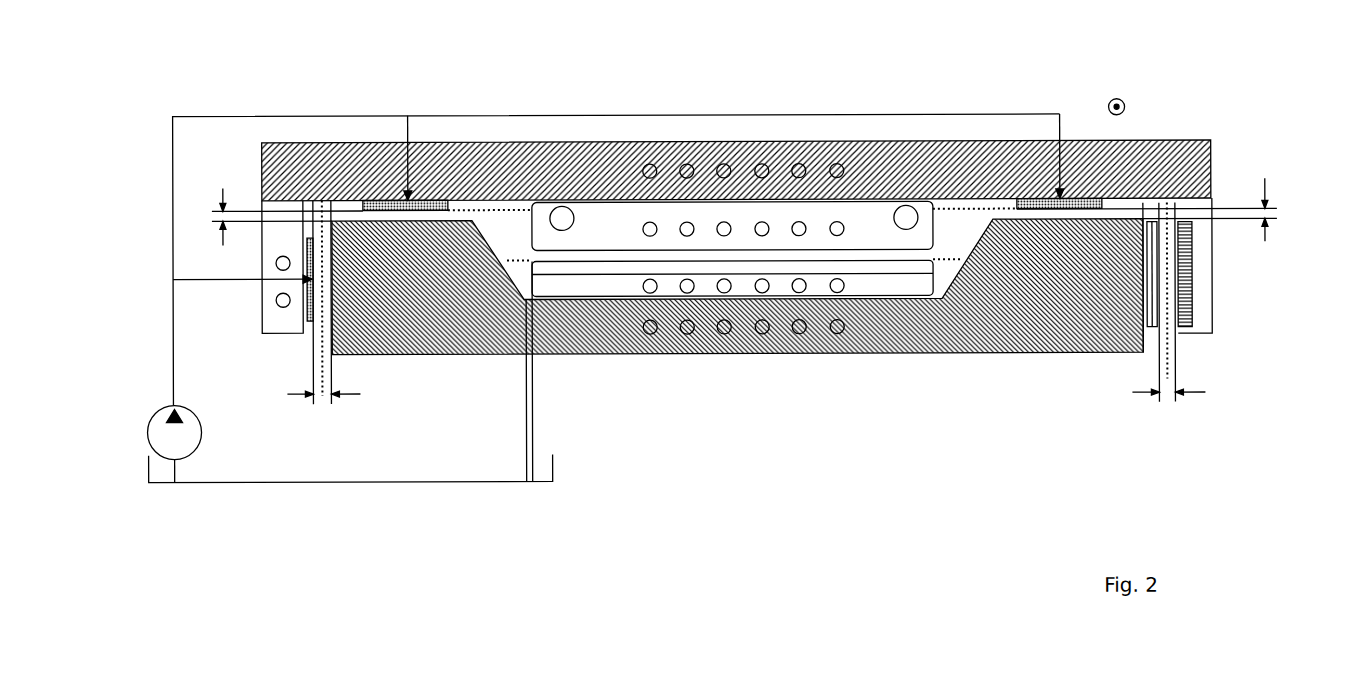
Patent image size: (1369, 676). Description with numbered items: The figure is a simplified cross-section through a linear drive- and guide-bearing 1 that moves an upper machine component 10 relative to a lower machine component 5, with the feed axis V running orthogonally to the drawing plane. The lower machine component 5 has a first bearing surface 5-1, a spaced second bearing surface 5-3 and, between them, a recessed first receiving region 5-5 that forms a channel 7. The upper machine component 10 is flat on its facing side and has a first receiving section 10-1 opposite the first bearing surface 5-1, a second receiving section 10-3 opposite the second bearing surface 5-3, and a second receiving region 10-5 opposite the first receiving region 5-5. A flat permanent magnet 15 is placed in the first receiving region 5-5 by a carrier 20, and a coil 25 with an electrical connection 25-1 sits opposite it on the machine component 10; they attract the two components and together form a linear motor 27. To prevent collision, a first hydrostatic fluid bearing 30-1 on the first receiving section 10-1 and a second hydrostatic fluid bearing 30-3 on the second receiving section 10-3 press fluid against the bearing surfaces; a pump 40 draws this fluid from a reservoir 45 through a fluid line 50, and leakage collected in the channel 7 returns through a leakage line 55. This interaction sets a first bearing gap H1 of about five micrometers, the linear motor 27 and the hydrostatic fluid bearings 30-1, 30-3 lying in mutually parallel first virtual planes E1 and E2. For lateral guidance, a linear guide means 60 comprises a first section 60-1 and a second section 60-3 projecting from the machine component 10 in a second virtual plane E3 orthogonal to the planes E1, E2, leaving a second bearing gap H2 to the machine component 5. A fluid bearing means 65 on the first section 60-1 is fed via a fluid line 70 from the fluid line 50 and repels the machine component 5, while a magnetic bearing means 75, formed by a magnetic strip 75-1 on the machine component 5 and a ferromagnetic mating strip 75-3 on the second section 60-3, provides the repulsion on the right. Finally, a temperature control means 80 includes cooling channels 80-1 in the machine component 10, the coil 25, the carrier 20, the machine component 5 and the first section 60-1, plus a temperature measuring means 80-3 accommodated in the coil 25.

The linear drive- and guide-bearing 1 is at (1180, 83).
The machine component 5 is at (1063, 317).
The first bearing surface 5-1 is at (426, 222).
The second bearing surface 5-3 is at (1013, 222).
The first receiving region 5-5 is at (942, 299).
The channel 7 is at (520, 272).
The machine component 10 is at (1190, 158).
The first receiving section 10-1 is at (345, 199).
The second receiving section 10-3 is at (1080, 197).
The second receiving region 10-5 is at (607, 196).
The magnet 15 is at (916, 268).
The carrier 20 is at (880, 288).
The coil 25 is at (870, 215).
The electrical connection 25-1 is at (561, 206).
The linear motor 27 is at (635, 255).
The first hydrostatic fluid bearing 30-1 is at (437, 201).
The second hydrostatic fluid bearing 30-3 is at (1033, 201).
The pump 40 is at (162, 437).
The reservoir 45 is at (388, 487).
The fluid line 50 is at (173, 150).
The leakage line 55 is at (525, 437).
The linear guide means 60 is at (1235, 292).
The first section 60-1 is at (273, 242).
The second section 60-3 is at (1202, 240).
The fluid bearing means 65 is at (263, 317).
The fluid line 70 is at (208, 281).
The magnetic bearing means 75 is at (1188, 297).
The magnetic strip 75-1 is at (1152, 320).
The mating strip 75-3 is at (1183, 320).
The temperature control means 80 is at (746, 413).
The channels 80-1 is at (276, 262).
The temperature measuring means 80-3 is at (906, 206).
The first virtual plane E1 is at (518, 262).
The first virtual plane E2 is at (958, 207).
The second virtual plane E3 is at (318, 363).
The first bearing gap H1 is at (212, 210).
The second bearing gap H2 is at (321, 399).
The feed axis V is at (1113, 99).